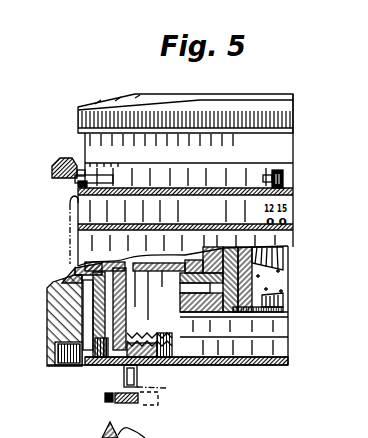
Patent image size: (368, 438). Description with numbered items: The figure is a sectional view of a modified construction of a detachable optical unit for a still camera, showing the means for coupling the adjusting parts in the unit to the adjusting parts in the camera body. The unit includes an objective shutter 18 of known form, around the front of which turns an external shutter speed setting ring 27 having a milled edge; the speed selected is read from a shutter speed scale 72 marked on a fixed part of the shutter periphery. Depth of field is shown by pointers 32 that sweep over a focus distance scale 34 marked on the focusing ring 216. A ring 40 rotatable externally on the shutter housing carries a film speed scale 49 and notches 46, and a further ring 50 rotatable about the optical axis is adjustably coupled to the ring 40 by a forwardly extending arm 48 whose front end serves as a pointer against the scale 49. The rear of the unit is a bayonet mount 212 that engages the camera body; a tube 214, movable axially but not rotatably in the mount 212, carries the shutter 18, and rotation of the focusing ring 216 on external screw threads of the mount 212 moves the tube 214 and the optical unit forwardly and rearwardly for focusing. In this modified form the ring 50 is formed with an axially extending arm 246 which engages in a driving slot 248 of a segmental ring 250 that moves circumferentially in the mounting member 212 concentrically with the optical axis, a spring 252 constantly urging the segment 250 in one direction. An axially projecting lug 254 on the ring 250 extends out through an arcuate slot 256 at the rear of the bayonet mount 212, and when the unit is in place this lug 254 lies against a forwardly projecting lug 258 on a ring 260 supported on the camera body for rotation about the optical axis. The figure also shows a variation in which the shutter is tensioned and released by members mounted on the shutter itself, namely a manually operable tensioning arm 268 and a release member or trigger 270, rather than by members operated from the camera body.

The external shutter speed setting ring 27 is at (78, 110).
The manually operable tensioning arm 268 is at (58, 157).
The objective shutter 18 is at (75, 180).
The ring 40 is at (72, 200).
The forwardly extending arm 48 is at (68, 218).
The depth of field pointers 32 is at (70, 265).
The focus distance scale 34 is at (60, 282).
The ring 50 is at (172, 240).
The shutter speed scale 72 is at (283, 144).
The film speed scale 49 is at (292, 198).
The notches 46 is at (289, 224).
The release member 270 is at (283, 176).
The focusing ring 216 is at (62, 311).
The tube 214 is at (105, 330).
The bayonet mount 212 is at (83, 367).
The spring 252 is at (115, 362).
The axially extending arm 246 is at (127, 317).
The driving slot 248 is at (138, 296).
The segmental ring 250 is at (178, 345).
The axially projecting lug 254 is at (138, 372).
The forwardly projecting lug 258 is at (140, 386).
The arcuate slot 256 is at (125, 367).
The ring 260 is at (132, 405).